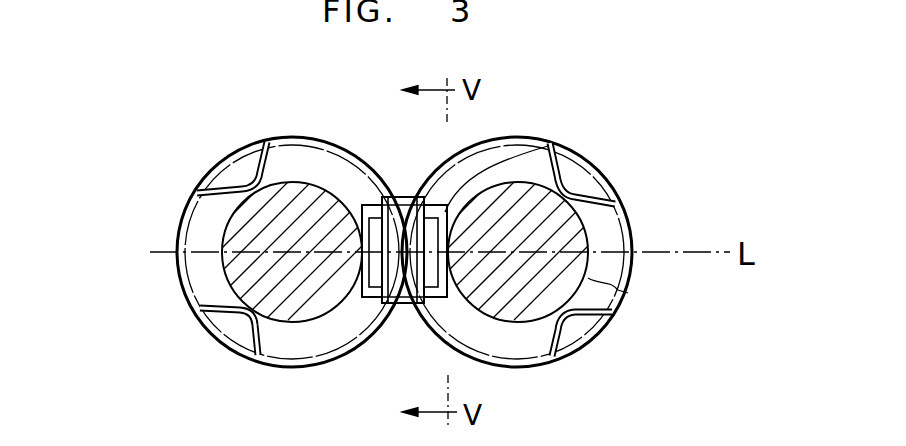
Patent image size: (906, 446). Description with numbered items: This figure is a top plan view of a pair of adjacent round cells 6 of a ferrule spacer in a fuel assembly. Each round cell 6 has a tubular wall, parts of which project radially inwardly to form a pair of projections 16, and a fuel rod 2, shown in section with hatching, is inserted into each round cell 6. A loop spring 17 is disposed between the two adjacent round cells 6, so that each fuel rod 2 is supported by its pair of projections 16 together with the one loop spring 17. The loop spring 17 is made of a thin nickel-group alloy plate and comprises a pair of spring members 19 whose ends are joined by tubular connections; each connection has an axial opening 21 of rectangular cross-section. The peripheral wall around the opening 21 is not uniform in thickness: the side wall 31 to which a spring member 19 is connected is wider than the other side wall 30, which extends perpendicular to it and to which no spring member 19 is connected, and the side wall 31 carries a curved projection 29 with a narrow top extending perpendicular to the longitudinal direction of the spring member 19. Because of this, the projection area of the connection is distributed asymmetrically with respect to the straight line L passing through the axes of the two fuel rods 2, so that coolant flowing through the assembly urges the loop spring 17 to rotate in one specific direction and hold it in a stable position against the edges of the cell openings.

The fuel rod 2 is at (628, 293).
The round cell 6 is at (190, 206).
The projection 16 is at (200, 310).
The loop spring 17 is at (390, 196).
The spring member 19 is at (345, 195).
The axial opening 21 is at (415, 197).
The curved projection 29 is at (343, 141).
The side wall 30 is at (405, 304).
The side wall 31 is at (372, 298).